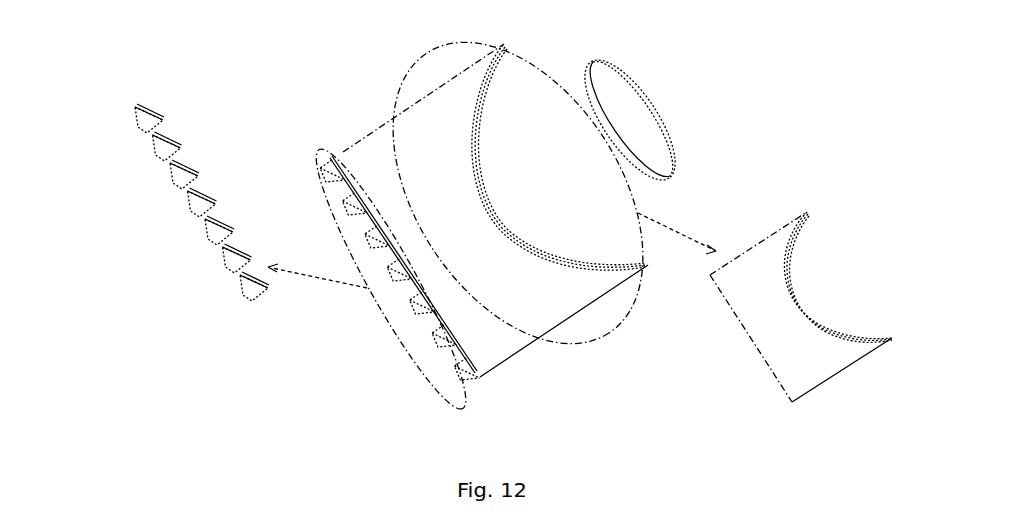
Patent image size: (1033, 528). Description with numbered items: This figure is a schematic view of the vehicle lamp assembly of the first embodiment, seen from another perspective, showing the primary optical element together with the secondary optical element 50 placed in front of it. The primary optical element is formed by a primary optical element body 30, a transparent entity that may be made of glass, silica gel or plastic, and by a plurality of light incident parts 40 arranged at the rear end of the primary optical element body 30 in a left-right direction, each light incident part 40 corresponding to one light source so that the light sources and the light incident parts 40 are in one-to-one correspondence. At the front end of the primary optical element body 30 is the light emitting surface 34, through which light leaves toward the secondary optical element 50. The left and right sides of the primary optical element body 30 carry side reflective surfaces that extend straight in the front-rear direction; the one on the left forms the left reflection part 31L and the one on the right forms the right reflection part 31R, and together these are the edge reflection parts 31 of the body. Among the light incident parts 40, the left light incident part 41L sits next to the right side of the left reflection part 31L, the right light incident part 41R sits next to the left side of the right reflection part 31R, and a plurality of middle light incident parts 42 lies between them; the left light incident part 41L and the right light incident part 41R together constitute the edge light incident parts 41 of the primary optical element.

The primary optical element body 30 is at (563, 345).
The edge reflection parts 31 is at (828, 285).
The left reflection part 31L is at (760, 240).
The right reflection part 31R is at (833, 380).
The light emitting surface 34 is at (795, 288).
The light incident parts 40 is at (398, 338).
The edge light incident parts 41 is at (151, 219).
The left light incident part 41L is at (140, 122).
The right light incident part 41R is at (250, 295).
The middle light incident parts 42 is at (205, 208).
The secondary optical element 50 is at (640, 80).